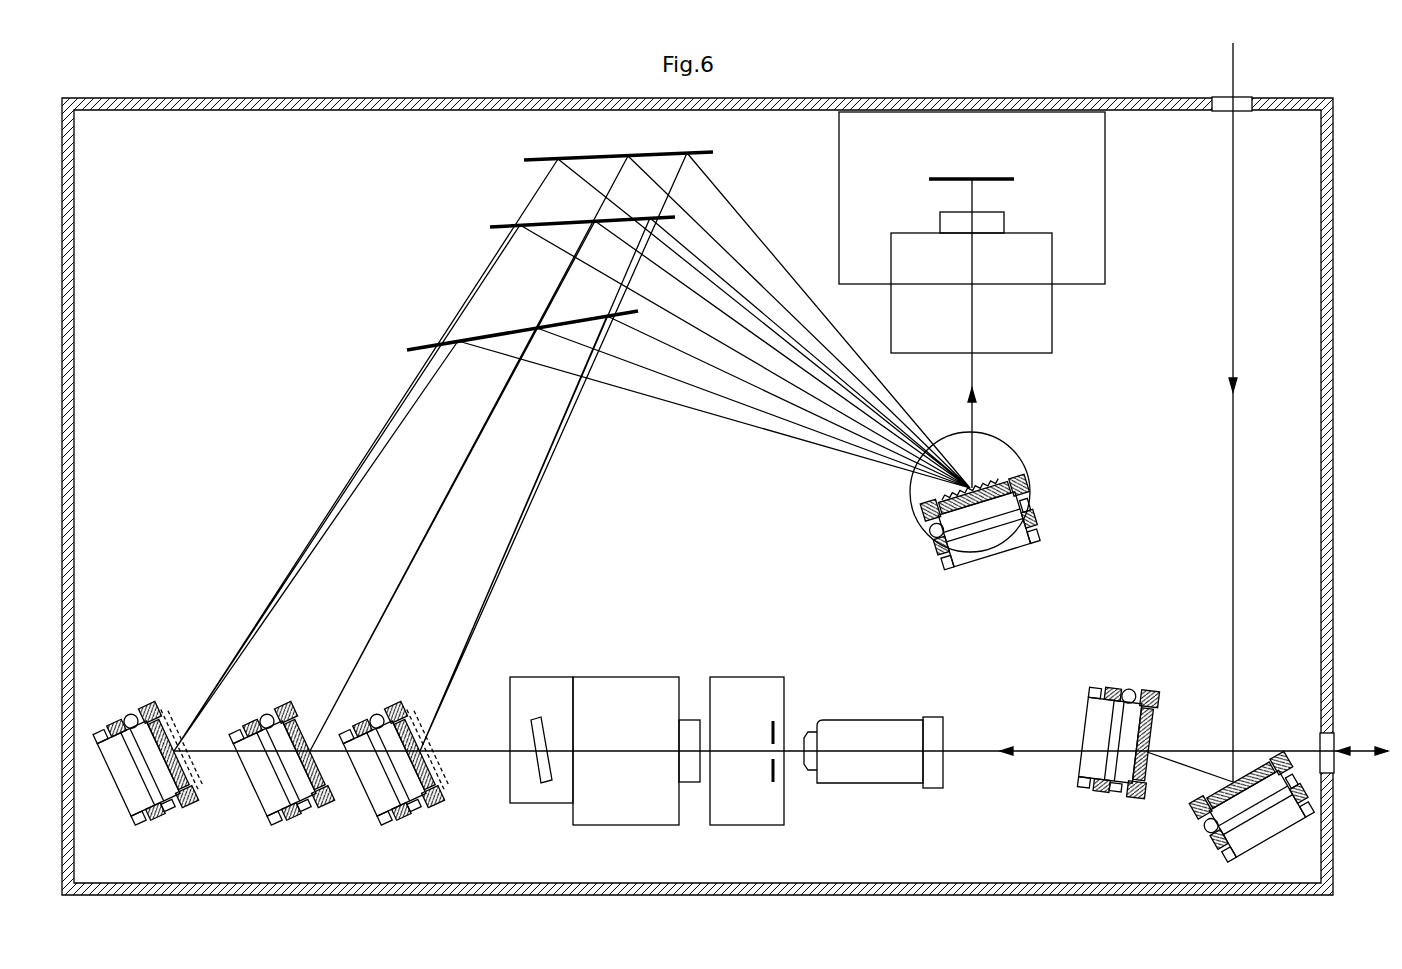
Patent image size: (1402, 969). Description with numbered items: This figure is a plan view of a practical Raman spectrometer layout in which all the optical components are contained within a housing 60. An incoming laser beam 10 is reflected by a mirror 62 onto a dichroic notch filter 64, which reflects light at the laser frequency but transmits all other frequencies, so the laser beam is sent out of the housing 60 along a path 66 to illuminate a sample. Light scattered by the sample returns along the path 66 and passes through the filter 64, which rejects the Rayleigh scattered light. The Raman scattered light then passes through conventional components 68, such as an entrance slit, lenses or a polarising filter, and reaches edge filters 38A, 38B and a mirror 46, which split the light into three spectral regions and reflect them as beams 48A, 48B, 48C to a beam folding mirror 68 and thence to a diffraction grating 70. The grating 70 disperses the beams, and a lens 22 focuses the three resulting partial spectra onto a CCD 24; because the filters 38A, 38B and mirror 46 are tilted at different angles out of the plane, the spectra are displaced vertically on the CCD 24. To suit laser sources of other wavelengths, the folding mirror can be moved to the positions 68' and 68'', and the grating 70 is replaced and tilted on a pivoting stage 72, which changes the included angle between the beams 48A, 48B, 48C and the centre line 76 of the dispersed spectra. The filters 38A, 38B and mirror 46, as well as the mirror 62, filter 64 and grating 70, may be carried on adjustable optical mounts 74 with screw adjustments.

The incoming laser beam 10 is at (1233, 531).
The lens 22 is at (1060, 318).
The CCD 24 is at (1078, 181).
The edge filter 38A is at (420, 740).
The edge filter 38B is at (310, 738).
The mirror 46 is at (178, 738).
The beam 48A is at (525, 538).
The beam 48B is at (440, 497).
The beam 48C is at (315, 540).
The housing 60 is at (350, 98).
The mirror 62 is at (1248, 775).
The dichroic notch filter 64 is at (1152, 732).
The path 66 is at (1363, 750).
The beam folding mirror 68 is at (684, 483).
The mirror position 68' is at (531, 217).
The mirror position 68'' is at (475, 326).
The diffraction grating 70 is at (993, 455).
The pivoting stage 72 is at (922, 490).
The adjustable optical mount 74 is at (150, 805).
The centre line 76 is at (975, 378).